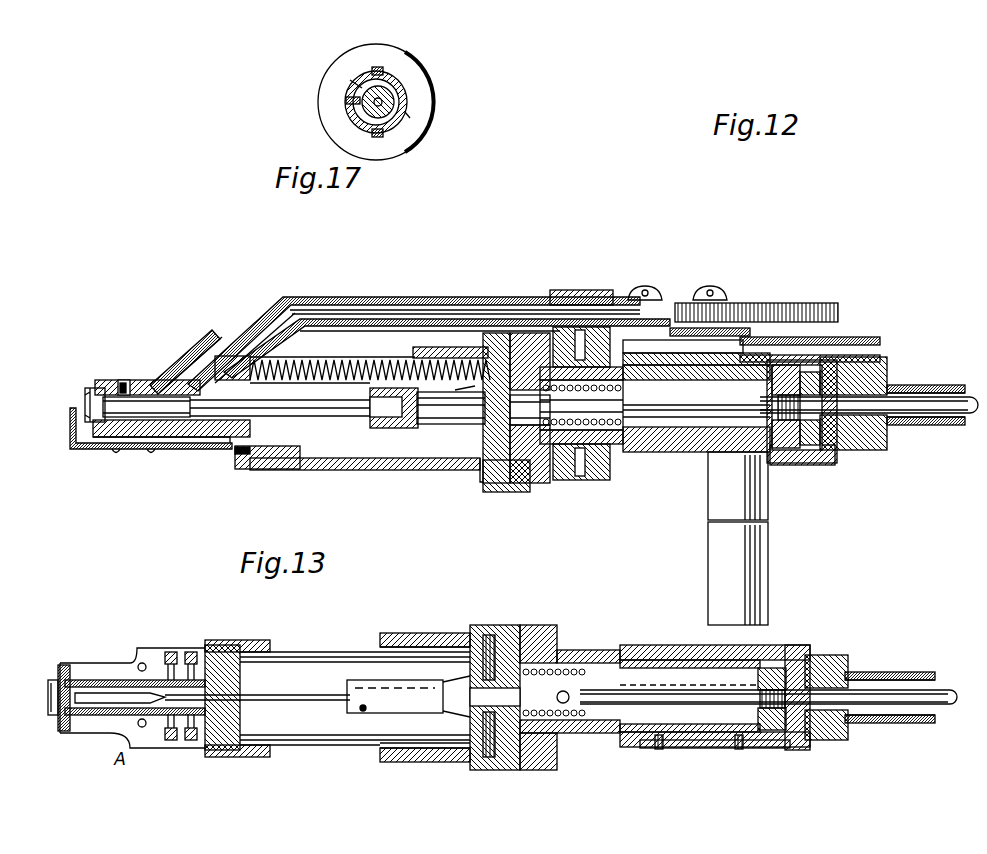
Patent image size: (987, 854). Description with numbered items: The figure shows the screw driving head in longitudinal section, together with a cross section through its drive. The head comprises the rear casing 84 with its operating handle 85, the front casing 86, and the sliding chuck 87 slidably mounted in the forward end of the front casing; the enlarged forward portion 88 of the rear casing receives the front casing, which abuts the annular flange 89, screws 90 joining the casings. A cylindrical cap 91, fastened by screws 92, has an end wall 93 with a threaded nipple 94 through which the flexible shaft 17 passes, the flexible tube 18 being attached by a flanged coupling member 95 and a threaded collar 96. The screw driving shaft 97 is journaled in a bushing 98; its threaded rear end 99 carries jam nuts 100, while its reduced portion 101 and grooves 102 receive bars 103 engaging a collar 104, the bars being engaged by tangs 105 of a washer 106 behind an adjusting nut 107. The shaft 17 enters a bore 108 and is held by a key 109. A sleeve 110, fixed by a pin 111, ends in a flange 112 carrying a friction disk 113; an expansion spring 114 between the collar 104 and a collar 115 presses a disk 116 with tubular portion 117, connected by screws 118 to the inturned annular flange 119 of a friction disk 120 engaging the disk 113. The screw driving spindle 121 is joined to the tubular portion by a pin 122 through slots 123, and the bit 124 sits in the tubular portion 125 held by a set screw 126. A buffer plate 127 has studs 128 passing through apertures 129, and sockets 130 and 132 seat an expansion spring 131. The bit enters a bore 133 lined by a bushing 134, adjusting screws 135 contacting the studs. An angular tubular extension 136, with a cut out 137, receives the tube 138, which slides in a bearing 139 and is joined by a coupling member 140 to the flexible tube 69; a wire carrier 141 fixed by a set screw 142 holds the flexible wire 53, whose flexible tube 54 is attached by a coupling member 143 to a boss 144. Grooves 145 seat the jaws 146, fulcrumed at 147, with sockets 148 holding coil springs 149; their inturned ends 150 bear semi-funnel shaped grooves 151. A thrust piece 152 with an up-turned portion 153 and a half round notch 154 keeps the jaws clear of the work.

In FIG. 17, the flexible shaft 17 is at (400, 100).
In FIG. 12, the flexible shaft 17 is at (955, 420).
In FIG. 13, the flexible shaft 17 is at (950, 690).
In FIG. 12, the flexible tube 18 is at (950, 388).
In FIG. 13, the flexible tube 18 is at (915, 680).
In FIG. 12, the flexible wire 53 is at (735, 303).
In FIG. 12, the flexible tube 54 is at (845, 330).
In FIG. 12, the flexible tube 69 is at (840, 312).
In FIG. 12, the rear casing 84 is at (655, 442).
In FIG. 12, the operating handle 85 is at (768, 515).
In FIG. 12, the front casing 86 is at (392, 468).
In FIG. 13, the front casing 86 is at (430, 635).
In FIG. 12, the sliding chuck 87 is at (225, 458).
In FIG. 13, the sliding chuck 87 is at (300, 650).
In FIG. 12, the enlarged forward portion 88 is at (572, 483).
In FIG. 13, the enlarged forward portion 88 is at (550, 762).
In FIG. 12, the annular flange 89 is at (485, 472).
In FIG. 12, the screws 90 is at (500, 335).
In FIG. 13, the screws 90 is at (512, 630).
In FIG. 12, the cylindrical cap 91 is at (837, 460).
In FIG. 13, the cylindrical cap 91 is at (795, 648).
In FIG. 13, the screws 92 is at (660, 748).
In FIG. 12, the end wall 93 is at (860, 450).
In FIG. 12, the threaded nipple 94 is at (905, 380).
In FIG. 12, the flanged coupling member 95 is at (900, 390).
In FIG. 12, the collar 96 is at (890, 438).
In FIG. 13, the collar 96 is at (835, 665).
In FIG. 17, the screw driving shaft 97 is at (410, 112).
In FIG. 12, the screw driving shaft 97 is at (680, 442).
In FIG. 13, the screw driving shaft 97 is at (665, 690).
In FIG. 12, the bushing 98 is at (738, 486).
In FIG. 12, the screw threaded rear end 99 is at (795, 465).
In FIG. 12, the jam nuts 100 is at (785, 399).
In FIG. 13, the jam nuts 100 is at (738, 748).
In FIG. 12, the reduced portion 101 is at (605, 452).
In FIG. 13, the reduced portion 101 is at (565, 688).
In FIG. 12, the grooves 102 is at (642, 452).
In FIG. 17, the bars 103 is at (360, 122).
In FIG. 12, the bars 103 is at (692, 445).
In FIG. 13, the bars 103 is at (592, 735).
In FIG. 12, the collar 104 is at (620, 456).
In FIG. 13, the collar 104 is at (565, 733).
In FIG. 17, the tangs 105 is at (380, 70).
In FIG. 17, the washer 106 is at (400, 143).
In FIG. 12, the washer 106 is at (840, 345).
In FIG. 13, the washer 106 is at (762, 742).
In FIG. 12, the adjusting nut 107 is at (880, 362).
In FIG. 13, the adjusting nut 107 is at (810, 745).
In FIG. 17, the bore 108 is at (362, 72).
In FIG. 12, the bore 108 is at (785, 342).
In FIG. 13, the bore 108 is at (755, 665).
In FIG. 17, the key 109 is at (350, 100).
In FIG. 12, the key 109 is at (815, 345).
In FIG. 13, the key 109 is at (788, 642).
In FIG. 12, the sleeve 110 is at (640, 290).
In FIG. 12, the pin 111 is at (648, 368).
In FIG. 13, the pin 111 is at (620, 660).
In FIG. 12, the flange 112 is at (560, 480).
In FIG. 13, the flange 112 is at (565, 625).
In FIG. 12, the friction disk 113 is at (575, 290).
In FIG. 13, the friction disk 113 is at (572, 760).
In FIG. 12, the expansion spring 114 is at (605, 305).
In FIG. 13, the expansion spring 114 is at (580, 660).
In FIG. 12, the collar 115 is at (540, 485).
In FIG. 12, the disk 116 is at (550, 300).
In FIG. 13, the disk 116 is at (510, 625).
In FIG. 12, the tubular portion 117 is at (500, 482).
In FIG. 13, the tubular portion 117 is at (432, 762).
In FIG. 12, the screws 118 is at (527, 335).
In FIG. 13, the screws 118 is at (530, 625).
In FIG. 12, the inturned annular flange 119 is at (558, 330).
In FIG. 13, the inturned annular flange 119 is at (540, 635).
In FIG. 12, the friction disk 120 is at (595, 480).
In FIG. 13, the friction disk 120 is at (565, 640).
In FIG. 12, the screw driving spindle 121 is at (435, 425).
In FIG. 12, the pin 122 is at (470, 425).
In FIG. 13, the pin 122 is at (470, 630).
In FIG. 12, the slots 123 is at (475, 386).
In FIG. 13, the slots 123 is at (465, 668).
In FIG. 12, the bit 124 is at (295, 412).
In FIG. 13, the bit 124 is at (272, 698).
In FIG. 12, the tubular portion 125 is at (385, 428).
In FIG. 13, the tubular portion 125 is at (378, 680).
In FIG. 12, the set screw 126 is at (400, 352).
In FIG. 13, the set screw 126 is at (362, 712).
In FIG. 12, the buffer plate 127 is at (520, 492).
In FIG. 13, the buffer plate 127 is at (475, 775).
In FIG. 12, the studs 128 is at (485, 482).
In FIG. 12, the apertures 129 is at (470, 425).
In FIG. 12, the sockets 130 is at (482, 322).
In FIG. 12, the expansion spring 131 is at (450, 320).
In FIG. 12, the socket 132 is at (325, 320).
In FIG. 12, the bore 133 is at (180, 437).
In FIG. 12, the bushing 134 is at (140, 445).
In FIG. 12, the adjusting screws 135 is at (270, 470).
In FIG. 12, the tubular extension 136 is at (175, 358).
In FIG. 12, the cut out 137 is at (150, 378).
In FIG. 12, the tube 138 is at (268, 302).
In FIG. 12, the bearing 139 is at (590, 300).
In FIG. 12, the coupling member 140 is at (712, 290).
In FIG. 12, the wire carrier 141 is at (620, 300).
In FIG. 12, the set screw 142 is at (605, 300).
In FIG. 12, the coupling member 143 is at (810, 320).
In FIG. 12, the boss 144 is at (790, 320).
In FIG. 13, the grooves 145 is at (225, 640).
In FIG. 13, the jaws 146 is at (95, 665).
In FIG. 13, the fulcrum 147 is at (150, 665).
In FIG. 13, the sockets 148 is at (190, 650).
In FIG. 13, the coil springs 149 is at (185, 742).
In FIG. 12, the inturned outer ends 150 is at (92, 450).
In FIG. 13, the inturned outer ends 150 is at (65, 722).
In FIG. 12, the semi-funnel shaped grooves 151 is at (92, 388).
In FIG. 13, the semi-funnel shaped grooves 151 is at (60, 665).
In FIG. 12, the thrust piece 152 is at (100, 426).
In FIG. 12, the up-turned portion 153 is at (72, 440).
In FIG. 13, the up-turned portion 153 is at (58, 712).
In FIG. 12, the half round notch 154 is at (70, 420).
In FIG. 13, the half round notch 154 is at (50, 695).